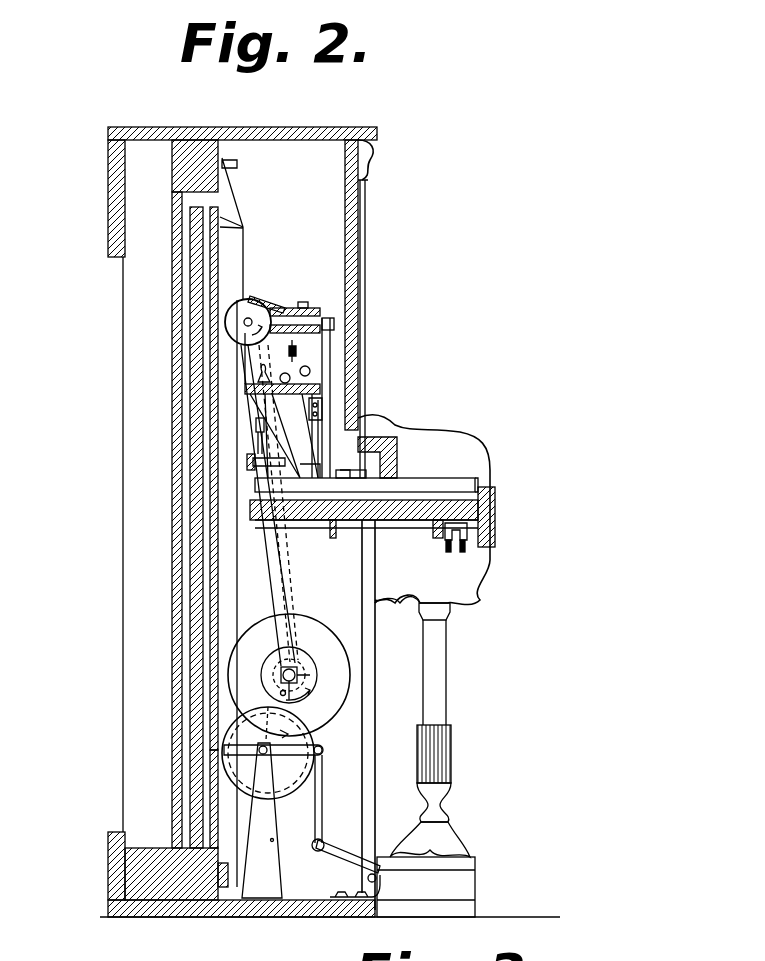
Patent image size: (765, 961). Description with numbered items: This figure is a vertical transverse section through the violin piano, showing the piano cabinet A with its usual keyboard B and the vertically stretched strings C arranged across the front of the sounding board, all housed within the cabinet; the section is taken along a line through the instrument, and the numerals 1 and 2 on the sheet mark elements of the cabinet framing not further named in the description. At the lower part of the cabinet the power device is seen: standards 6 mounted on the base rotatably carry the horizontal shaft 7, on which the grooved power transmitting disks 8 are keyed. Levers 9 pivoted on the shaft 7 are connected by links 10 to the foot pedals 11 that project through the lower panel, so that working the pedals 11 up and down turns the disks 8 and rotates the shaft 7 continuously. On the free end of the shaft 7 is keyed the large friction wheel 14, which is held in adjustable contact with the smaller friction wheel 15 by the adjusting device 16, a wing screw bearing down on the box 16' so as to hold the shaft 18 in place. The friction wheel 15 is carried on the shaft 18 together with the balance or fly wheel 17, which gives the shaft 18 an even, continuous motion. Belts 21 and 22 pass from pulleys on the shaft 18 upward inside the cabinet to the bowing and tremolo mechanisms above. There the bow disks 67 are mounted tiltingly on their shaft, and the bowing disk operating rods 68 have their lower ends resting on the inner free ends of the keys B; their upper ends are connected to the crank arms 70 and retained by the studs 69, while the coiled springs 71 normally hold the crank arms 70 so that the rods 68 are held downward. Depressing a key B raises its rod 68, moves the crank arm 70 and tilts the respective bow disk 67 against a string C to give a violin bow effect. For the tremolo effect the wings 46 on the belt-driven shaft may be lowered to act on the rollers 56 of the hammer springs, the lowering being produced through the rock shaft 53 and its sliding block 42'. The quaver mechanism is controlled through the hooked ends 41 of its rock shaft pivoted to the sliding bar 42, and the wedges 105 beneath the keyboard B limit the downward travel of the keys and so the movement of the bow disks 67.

The piano cabinet A is at (316, 522).
The keyboard B is at (450, 478).
The strings C is at (230, 464).
The sounding board 1 is at (215, 723).
The post 2 is at (193, 655).
The standards 6 is at (263, 857).
The shaft 7 is at (280, 733).
The power transmitting disks 8 is at (306, 790).
The levers 9 is at (285, 770).
The links 10 is at (320, 815).
The foot pedals 11 is at (345, 858).
The large friction wheel 14 is at (213, 772).
The smaller friction wheel 15 is at (313, 664).
The adjusting device 16 is at (296, 505).
The box 16' is at (315, 689).
The fly wheel 17 is at (318, 642).
The shaft 18 is at (422, 682).
The belt 21 is at (287, 577).
The belt 22 is at (253, 543).
The hooked ends 41 is at (467, 533).
The sliding bar 42 is at (505, 554).
The sliding block 42' is at (423, 552).
The wings 46 is at (290, 350).
The rock shaft 53 is at (357, 533).
The rollers 56 is at (310, 372).
The bow disks 67 is at (250, 300).
The rods 68 is at (368, 405).
The studs 69 is at (333, 325).
The crank arms 70 is at (325, 320).
The coiled springs 71 is at (283, 693).
The wedges 105 is at (408, 497).